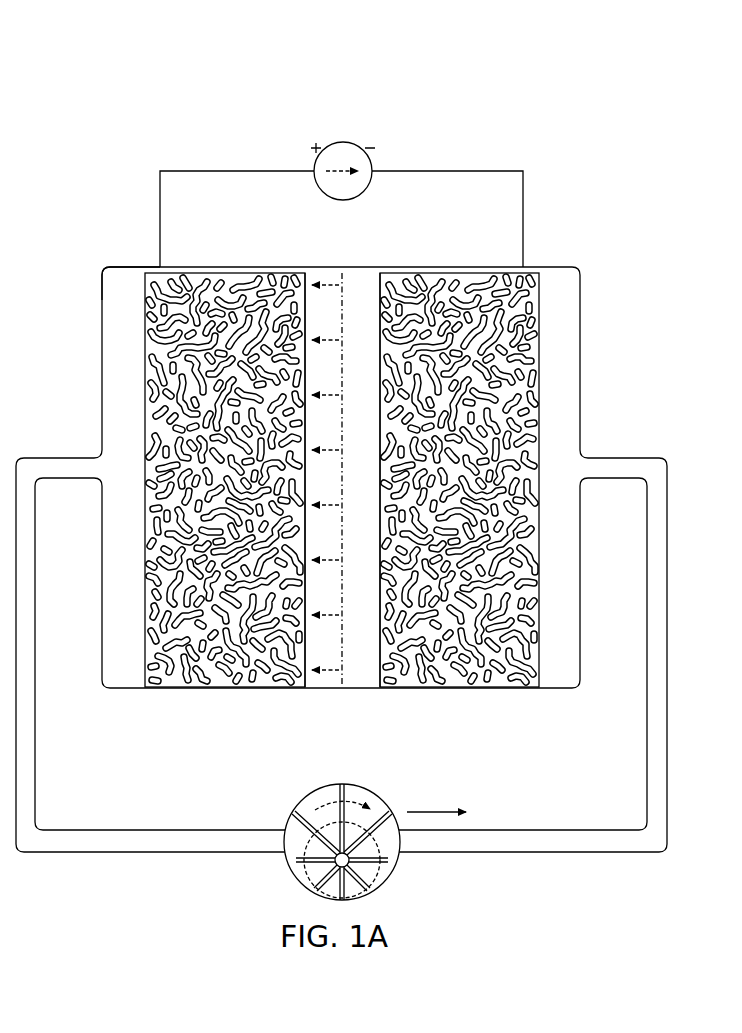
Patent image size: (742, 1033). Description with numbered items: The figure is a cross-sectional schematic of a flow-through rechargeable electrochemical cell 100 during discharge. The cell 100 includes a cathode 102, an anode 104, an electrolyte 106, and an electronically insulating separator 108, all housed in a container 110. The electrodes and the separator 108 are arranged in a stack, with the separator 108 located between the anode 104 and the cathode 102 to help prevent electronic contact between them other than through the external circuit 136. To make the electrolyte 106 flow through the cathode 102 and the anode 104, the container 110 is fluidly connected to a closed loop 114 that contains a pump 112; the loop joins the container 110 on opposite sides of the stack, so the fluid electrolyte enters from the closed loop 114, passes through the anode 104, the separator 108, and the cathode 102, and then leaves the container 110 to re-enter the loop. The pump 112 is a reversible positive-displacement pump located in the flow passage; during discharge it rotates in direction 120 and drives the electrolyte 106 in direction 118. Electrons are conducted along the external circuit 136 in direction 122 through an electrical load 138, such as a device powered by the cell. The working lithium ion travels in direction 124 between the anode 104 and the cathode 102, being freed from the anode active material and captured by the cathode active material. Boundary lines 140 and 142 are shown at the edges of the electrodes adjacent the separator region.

The electrochemical cell 100 is at (190, 84).
The cathode 102 is at (203, 689).
The anode 104 is at (470, 689).
The electrolyte 106 is at (580, 362).
The electronically insulating separator 108 is at (345, 270).
The container 110 is at (128, 266).
The pump 112 is at (288, 862).
The closed loop 114 is at (667, 656).
The direction 118 is at (430, 808).
The direction 120 is at (325, 800).
The direction 122 is at (338, 163).
The direction 124 is at (323, 689).
The external circuit 136 is at (523, 222).
The electrical load 138 is at (372, 163).
The first current collector 140 is at (307, 268).
The second current collector 142 is at (376, 689).